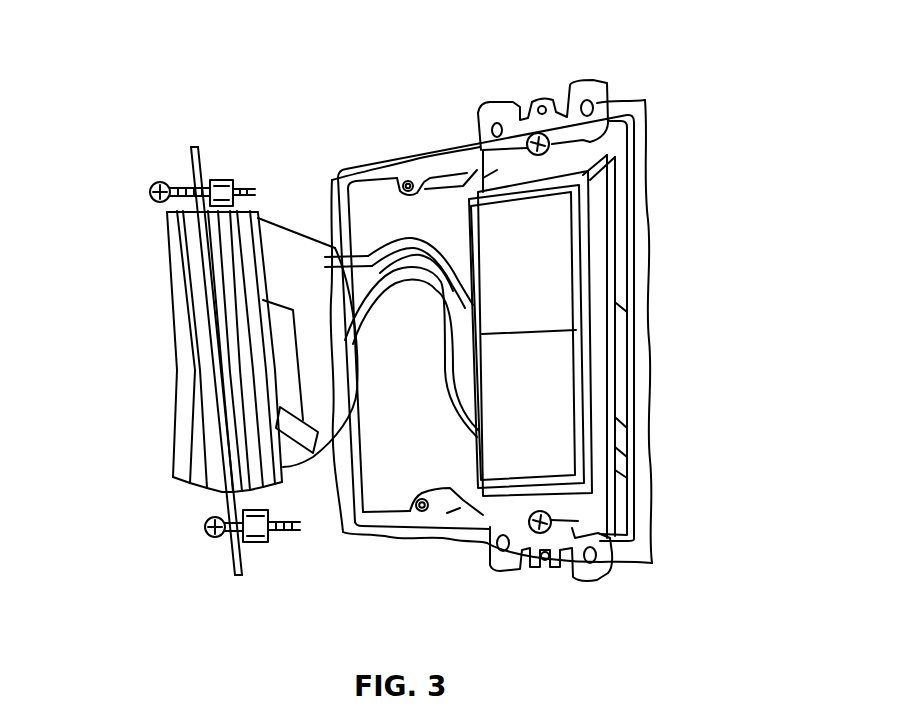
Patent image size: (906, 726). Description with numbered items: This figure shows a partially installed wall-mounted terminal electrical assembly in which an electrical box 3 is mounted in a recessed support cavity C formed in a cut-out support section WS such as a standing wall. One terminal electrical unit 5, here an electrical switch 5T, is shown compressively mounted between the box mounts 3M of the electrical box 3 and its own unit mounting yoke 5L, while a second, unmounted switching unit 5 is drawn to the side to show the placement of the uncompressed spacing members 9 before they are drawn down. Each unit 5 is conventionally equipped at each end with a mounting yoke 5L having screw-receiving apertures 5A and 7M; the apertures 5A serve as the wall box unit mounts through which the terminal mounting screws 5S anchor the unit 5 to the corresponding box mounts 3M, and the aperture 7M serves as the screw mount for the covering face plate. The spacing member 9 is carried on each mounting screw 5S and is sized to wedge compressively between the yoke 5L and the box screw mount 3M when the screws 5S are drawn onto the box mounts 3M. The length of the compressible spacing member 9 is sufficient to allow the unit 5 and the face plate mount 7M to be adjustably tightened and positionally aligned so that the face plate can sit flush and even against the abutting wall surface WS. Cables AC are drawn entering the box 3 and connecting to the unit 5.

The electrical box 3 is at (643, 105).
The recessed support cavity C is at (357, 170).
The terminal electrical unit box mount 3M is at (405, 183).
The electrical switch 5T is at (551, 259).
The mounting yoke 5L is at (191, 147).
The face plate terminal electrical unit mount 7M is at (543, 97).
The spacing member 9 is at (220, 182).
The terminal mounting screw 5S is at (150, 194).
The screw receiving aperture 5A is at (196, 165).
The terminal electrical unit 5 is at (173, 325).
The cables AC is at (373, 257).
The support surface WS is at (668, 453).